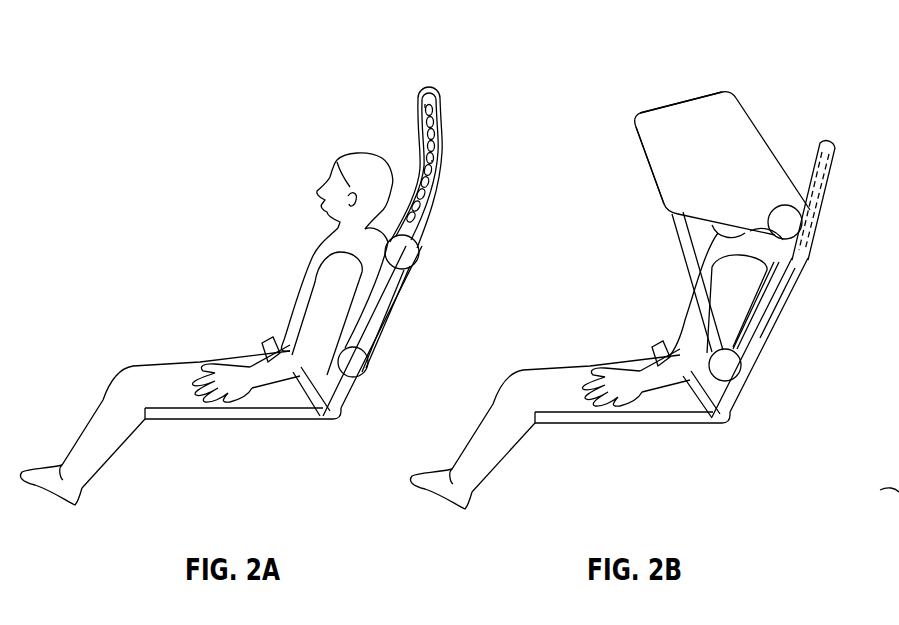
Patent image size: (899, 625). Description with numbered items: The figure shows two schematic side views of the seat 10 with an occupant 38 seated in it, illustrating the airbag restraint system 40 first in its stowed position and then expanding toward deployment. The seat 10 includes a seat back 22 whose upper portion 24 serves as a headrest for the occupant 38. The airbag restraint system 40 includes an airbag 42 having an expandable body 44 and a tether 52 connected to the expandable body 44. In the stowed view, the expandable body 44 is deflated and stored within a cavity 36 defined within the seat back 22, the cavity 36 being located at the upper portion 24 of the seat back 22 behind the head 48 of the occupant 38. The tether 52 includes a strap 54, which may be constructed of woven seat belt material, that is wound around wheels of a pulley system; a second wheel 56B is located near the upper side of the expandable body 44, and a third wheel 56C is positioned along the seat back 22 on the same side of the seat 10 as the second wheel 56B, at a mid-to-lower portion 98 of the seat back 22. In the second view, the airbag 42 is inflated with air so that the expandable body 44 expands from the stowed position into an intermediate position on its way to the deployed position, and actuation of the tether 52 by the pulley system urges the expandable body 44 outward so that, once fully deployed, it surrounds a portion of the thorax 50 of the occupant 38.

In FIG. 2A, the seat 10 is at (305, 438).
In FIG. 2B, the seat 10 is at (691, 442).
In FIG. 2A, the seat back 22 is at (408, 278).
In FIG. 2B, the seat back 22 is at (800, 265).
In FIG. 2A, the upper portion 24 is at (418, 97).
In FIG. 2B, the upper portion 24 is at (833, 145).
In FIG. 2A, the cavity 36 is at (443, 168).
In FIG. 2B, the cavity 36 is at (833, 187).
In FIG. 2A, the occupant 38 is at (152, 363).
In FIG. 2B, the occupant 38 is at (562, 383).
In FIG. 2A, the airbag restraint system 40 is at (438, 69).
In FIG. 2B, the airbag restraint system 40 is at (751, 92).
In FIG. 2A, the airbag 42 is at (451, 120).
In FIG. 2B, the airbag 42 is at (680, 102).
In FIG. 2A, the expandable body 44 is at (441, 153).
In FIG. 2B, the expandable body 44 is at (684, 165).
In FIG. 2A, the head 48 is at (353, 162).
In FIG. 2A, the thorax 50 is at (303, 270).
In FIG. 2B, the thorax 50 is at (688, 316).
In FIG. 2A, the tether 52 is at (392, 339).
In FIG. 2B, the tether 52 is at (780, 345).
In FIG. 2A, the strap 54 is at (389, 305).
In FIG. 2B, the strap 54 is at (783, 292).
In FIG. 2A, the second wheel 56B is at (400, 252).
In FIG. 2B, the second wheel 56B is at (787, 222).
In FIG. 2A, the third wheel 56C is at (368, 361).
In FIG. 2B, the third wheel 56C is at (728, 367).
In FIG. 2A, the mid-to-lower portion 98 is at (366, 399).
In FIG. 2B, the mid-to-lower portion 98 is at (744, 413).